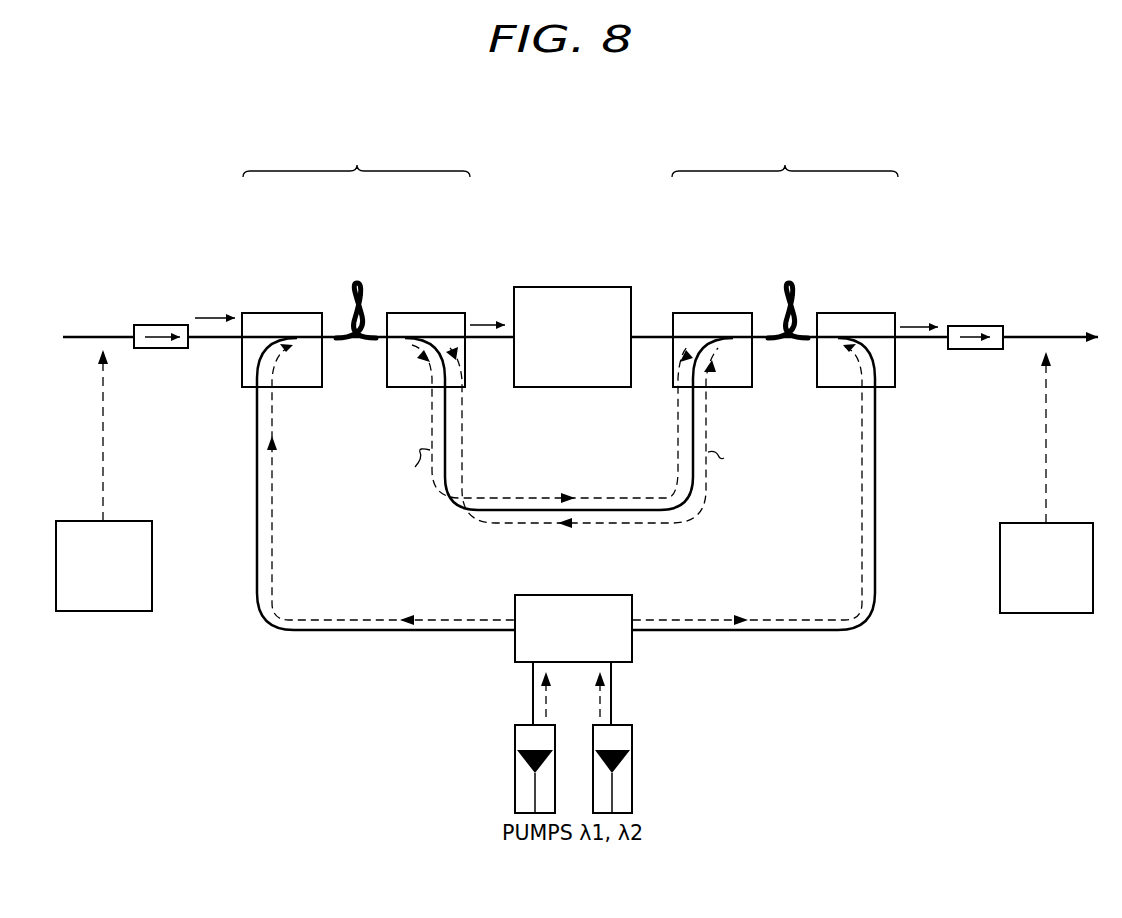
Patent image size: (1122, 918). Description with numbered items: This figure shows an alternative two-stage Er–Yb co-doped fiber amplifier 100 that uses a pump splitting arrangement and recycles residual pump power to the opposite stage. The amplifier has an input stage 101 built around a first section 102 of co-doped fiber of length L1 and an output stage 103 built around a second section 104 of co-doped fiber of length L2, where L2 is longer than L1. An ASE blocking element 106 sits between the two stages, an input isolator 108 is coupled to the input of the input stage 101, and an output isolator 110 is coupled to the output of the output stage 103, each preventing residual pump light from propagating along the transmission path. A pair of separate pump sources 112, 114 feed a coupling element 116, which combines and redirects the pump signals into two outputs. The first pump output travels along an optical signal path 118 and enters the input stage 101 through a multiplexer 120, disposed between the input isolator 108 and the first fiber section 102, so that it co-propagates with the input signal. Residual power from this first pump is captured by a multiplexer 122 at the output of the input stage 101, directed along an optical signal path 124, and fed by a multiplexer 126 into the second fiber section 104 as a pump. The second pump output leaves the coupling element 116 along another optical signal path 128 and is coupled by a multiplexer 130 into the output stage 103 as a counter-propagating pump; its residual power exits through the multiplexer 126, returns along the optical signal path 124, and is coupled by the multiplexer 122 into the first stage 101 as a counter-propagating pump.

The two-stage Er-Yb co-doped fiber amplifier 100 is at (582, 94).
The input stage 101 is at (356, 184).
The first section of Er-Yb co-doped fiber 102 is at (365, 300).
The output stage 103 is at (785, 184).
The second section of Er-Yb co-doped fiber 104 is at (797, 300).
The ASE blocking element 106 is at (566, 287).
The input isolator 108 is at (164, 325).
The output isolator 110 is at (979, 326).
The pump source 112 is at (515, 775).
The pump source 114 is at (633, 776).
The coupling element 116 is at (580, 595).
The optical signal path 118 is at (257, 488).
The multiplexer 120 is at (258, 312).
The multiplexer 122 is at (465, 378).
The optical signal path 124 is at (490, 512).
The multiplexer 126 is at (707, 314).
The optical signal path 128 is at (877, 498).
The multiplexer 130 is at (895, 378).